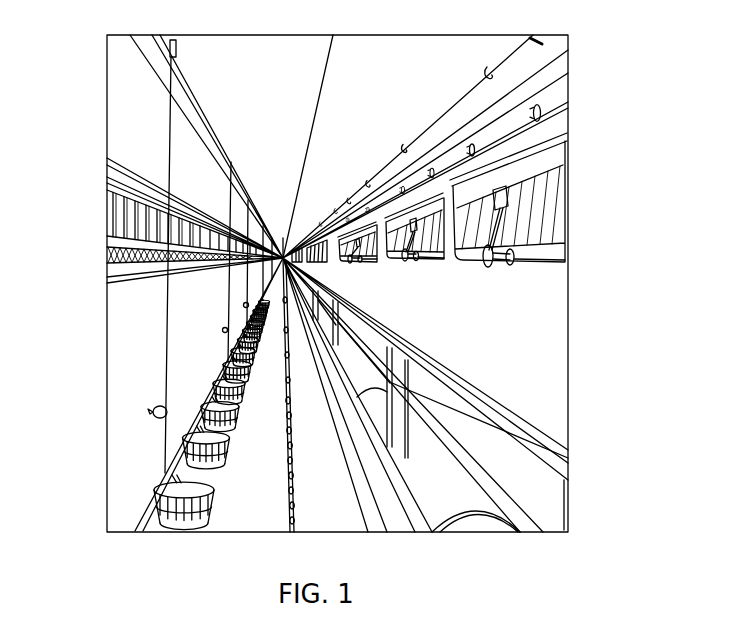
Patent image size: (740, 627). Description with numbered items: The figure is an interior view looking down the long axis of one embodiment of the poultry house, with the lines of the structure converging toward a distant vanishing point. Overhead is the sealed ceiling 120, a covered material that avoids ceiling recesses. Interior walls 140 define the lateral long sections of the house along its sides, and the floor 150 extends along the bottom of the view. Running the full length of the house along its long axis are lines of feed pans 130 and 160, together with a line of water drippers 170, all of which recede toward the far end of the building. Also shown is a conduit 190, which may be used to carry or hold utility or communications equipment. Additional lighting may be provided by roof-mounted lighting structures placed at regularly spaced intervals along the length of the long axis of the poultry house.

The sealed ceiling 120 is at (130, 75).
The line of feed pans 130 is at (103, 250).
The interior walls 140 is at (495, 337).
The floor 150 is at (140, 348).
The line of feed pans 160 is at (155, 498).
The water drippers 170 is at (295, 510).
The conduit 190 is at (520, 55).